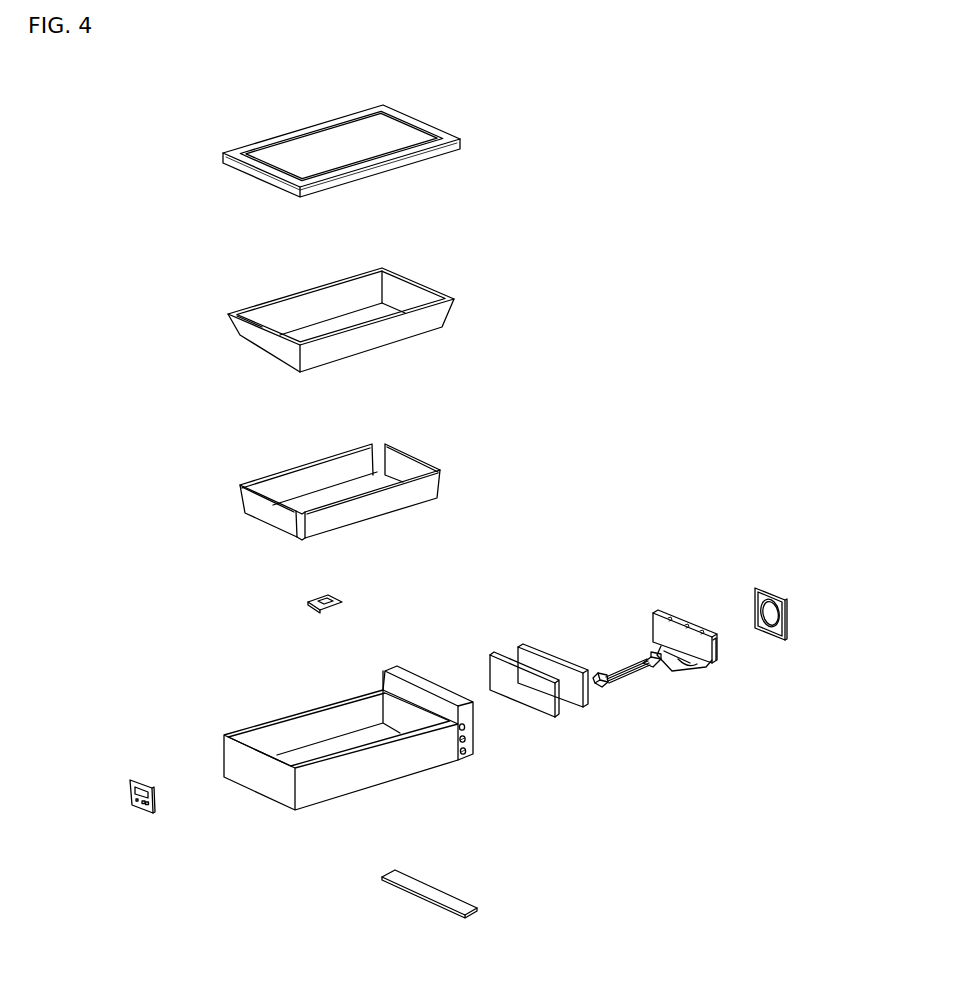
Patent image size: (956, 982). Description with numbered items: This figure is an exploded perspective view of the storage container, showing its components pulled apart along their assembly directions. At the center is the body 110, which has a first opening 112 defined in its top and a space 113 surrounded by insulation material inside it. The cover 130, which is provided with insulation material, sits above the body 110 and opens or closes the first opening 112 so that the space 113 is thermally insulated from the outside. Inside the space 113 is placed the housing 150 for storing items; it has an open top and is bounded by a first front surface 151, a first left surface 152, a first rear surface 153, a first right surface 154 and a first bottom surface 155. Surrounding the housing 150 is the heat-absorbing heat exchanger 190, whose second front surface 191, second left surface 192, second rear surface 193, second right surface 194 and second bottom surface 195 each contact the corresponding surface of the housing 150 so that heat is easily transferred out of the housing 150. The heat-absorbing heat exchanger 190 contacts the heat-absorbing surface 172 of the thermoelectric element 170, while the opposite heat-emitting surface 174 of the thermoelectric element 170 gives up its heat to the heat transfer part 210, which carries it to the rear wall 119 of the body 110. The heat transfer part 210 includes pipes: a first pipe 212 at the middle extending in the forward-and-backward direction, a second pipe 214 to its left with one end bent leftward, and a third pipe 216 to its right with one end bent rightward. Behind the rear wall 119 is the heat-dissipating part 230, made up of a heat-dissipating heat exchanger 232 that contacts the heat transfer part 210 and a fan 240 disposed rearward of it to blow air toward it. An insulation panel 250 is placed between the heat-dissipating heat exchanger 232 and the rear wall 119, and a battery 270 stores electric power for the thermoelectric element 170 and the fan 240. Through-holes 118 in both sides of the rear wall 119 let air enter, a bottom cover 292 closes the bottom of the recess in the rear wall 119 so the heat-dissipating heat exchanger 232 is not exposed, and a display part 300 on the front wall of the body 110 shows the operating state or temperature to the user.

The body 110 is at (329, 738).
The first opening 112 is at (268, 722).
The space 113 is at (318, 727).
The through-holes 118 is at (465, 757).
The rear wall 119 is at (464, 714).
The cover 130 is at (204, 161).
The housing 150 is at (298, 311).
The first front surface 151 is at (263, 347).
The first left surface 152 is at (270, 316).
The first rear surface 153 is at (402, 295).
The first right surface 154 is at (395, 325).
The first bottom surface 155 is at (335, 327).
The thermoelectric element 170 is at (370, 605).
The heat-absorbing surface 172 is at (337, 600).
The heat-emitting surface 174 is at (397, 583).
The heat-absorbing heat exchanger 190 is at (291, 482).
The second front surface 191 is at (263, 512).
The second left surface 192 is at (337, 468).
The second rear surface 193 is at (407, 465).
The second right surface 194 is at (397, 497).
The second bottom surface 195 is at (302, 512).
The heat transfer part 210 is at (681, 630).
The first pipe 212 is at (627, 682).
The second pipe 214 is at (623, 668).
The third pipe 216 is at (645, 673).
The heat-dissipating part 230 is at (673, 594).
The heat-dissipating heat exchanger 232 is at (717, 648).
The fan 240 is at (788, 620).
The insulation panel 250 is at (550, 707).
The battery 270 is at (588, 703).
The bottom cover 292 is at (432, 892).
The display part 300 is at (157, 807).